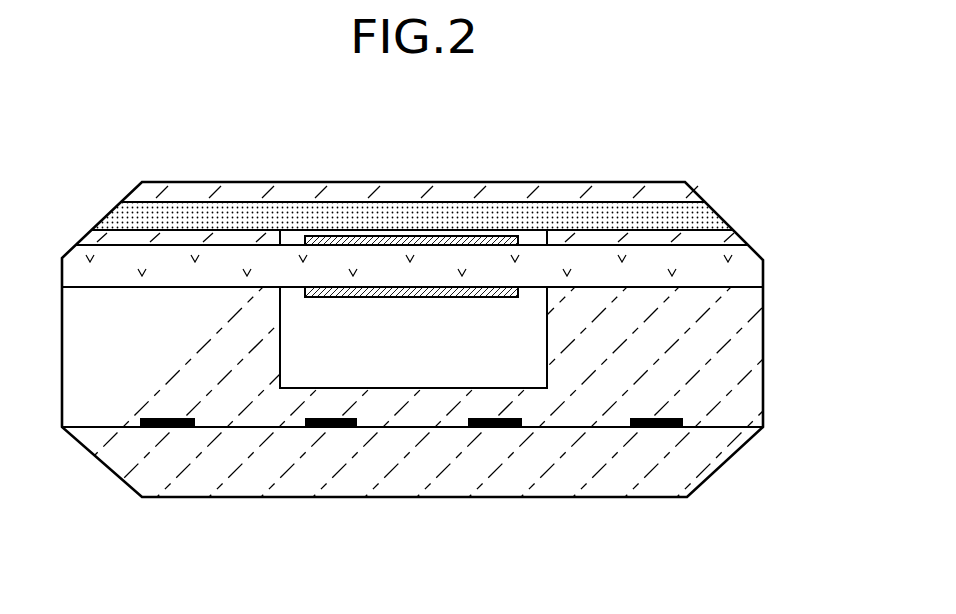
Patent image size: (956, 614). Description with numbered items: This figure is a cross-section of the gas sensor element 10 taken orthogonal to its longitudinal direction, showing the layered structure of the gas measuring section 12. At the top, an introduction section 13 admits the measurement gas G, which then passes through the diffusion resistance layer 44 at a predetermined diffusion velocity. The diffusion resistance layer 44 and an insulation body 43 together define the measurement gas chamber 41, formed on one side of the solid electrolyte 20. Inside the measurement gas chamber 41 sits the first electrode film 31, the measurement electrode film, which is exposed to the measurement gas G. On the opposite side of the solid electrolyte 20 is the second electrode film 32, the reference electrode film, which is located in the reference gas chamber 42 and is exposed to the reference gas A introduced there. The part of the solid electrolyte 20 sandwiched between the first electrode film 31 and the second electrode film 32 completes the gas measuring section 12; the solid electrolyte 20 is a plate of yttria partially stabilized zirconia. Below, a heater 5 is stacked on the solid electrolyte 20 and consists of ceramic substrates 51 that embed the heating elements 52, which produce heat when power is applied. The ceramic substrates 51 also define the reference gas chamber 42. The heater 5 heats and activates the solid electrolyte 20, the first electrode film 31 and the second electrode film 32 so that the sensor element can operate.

The gas sensor element 10 is at (768, 75).
The gas measuring section 12 is at (729, 160).
The introduction section 13 is at (157, 204).
The insulation body 43 is at (243, 192).
The diffusion resistance layer 44 is at (587, 217).
The measurement gas chamber 41 is at (527, 233).
The first electrode film 31 is at (403, 234).
The second electrode film 32 is at (377, 298).
The solid electrolyte 20 is at (440, 270).
The reference gas chamber 42 is at (442, 365).
The reference gas A is at (312, 352).
The ceramic substrates 51 is at (712, 369).
The heating elements 52 is at (493, 430).
The heater 5 is at (658, 498).
The measurement gas G is at (290, 228).